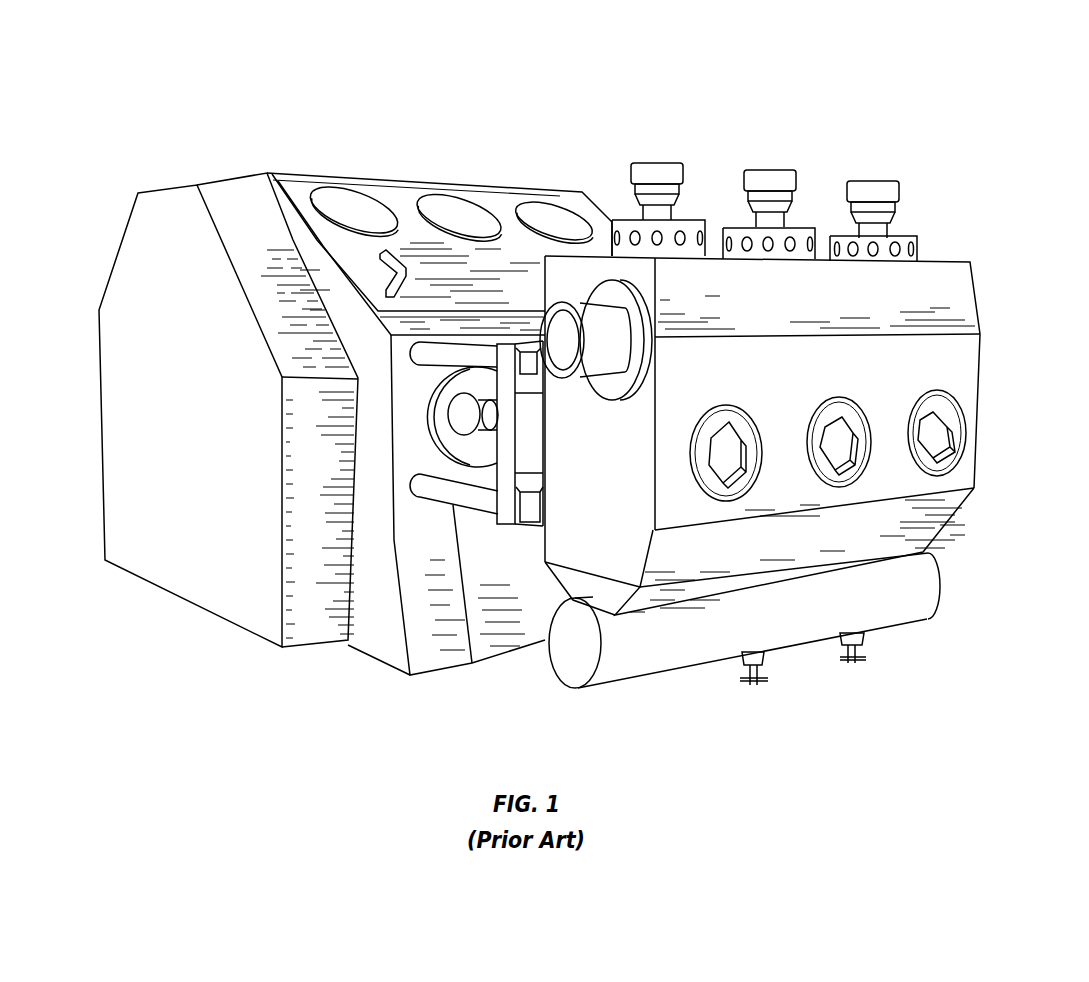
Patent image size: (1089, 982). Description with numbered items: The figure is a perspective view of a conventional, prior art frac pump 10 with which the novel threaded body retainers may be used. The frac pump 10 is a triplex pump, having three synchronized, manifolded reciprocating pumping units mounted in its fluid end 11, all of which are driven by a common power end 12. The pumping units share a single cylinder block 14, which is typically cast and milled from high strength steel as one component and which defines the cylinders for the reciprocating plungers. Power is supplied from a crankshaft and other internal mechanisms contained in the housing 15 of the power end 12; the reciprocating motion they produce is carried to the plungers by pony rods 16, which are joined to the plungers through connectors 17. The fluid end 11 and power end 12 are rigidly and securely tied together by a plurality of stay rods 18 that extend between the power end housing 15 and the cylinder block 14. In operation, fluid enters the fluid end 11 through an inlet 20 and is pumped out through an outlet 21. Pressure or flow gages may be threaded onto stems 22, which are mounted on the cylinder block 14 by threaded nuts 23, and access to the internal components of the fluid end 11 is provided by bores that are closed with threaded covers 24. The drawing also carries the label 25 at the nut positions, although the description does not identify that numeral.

The frac pump 10 is at (226, 90).
The fluid end 11 is at (985, 292).
The power end 12 is at (97, 397).
The cylinder block 14 is at (536, 458).
The power end housing 15 is at (413, 578).
The pony rods 16 is at (462, 425).
The connectors 17 is at (487, 412).
The stay rods 18 is at (434, 357).
The inlet 20 is at (572, 652).
The outlet 21 is at (575, 342).
The stems 22 is at (656, 163).
The threaded nuts 23 is at (618, 228).
The threaded covers 24 is at (742, 460).
The bolt holes 25 is at (769, 252).